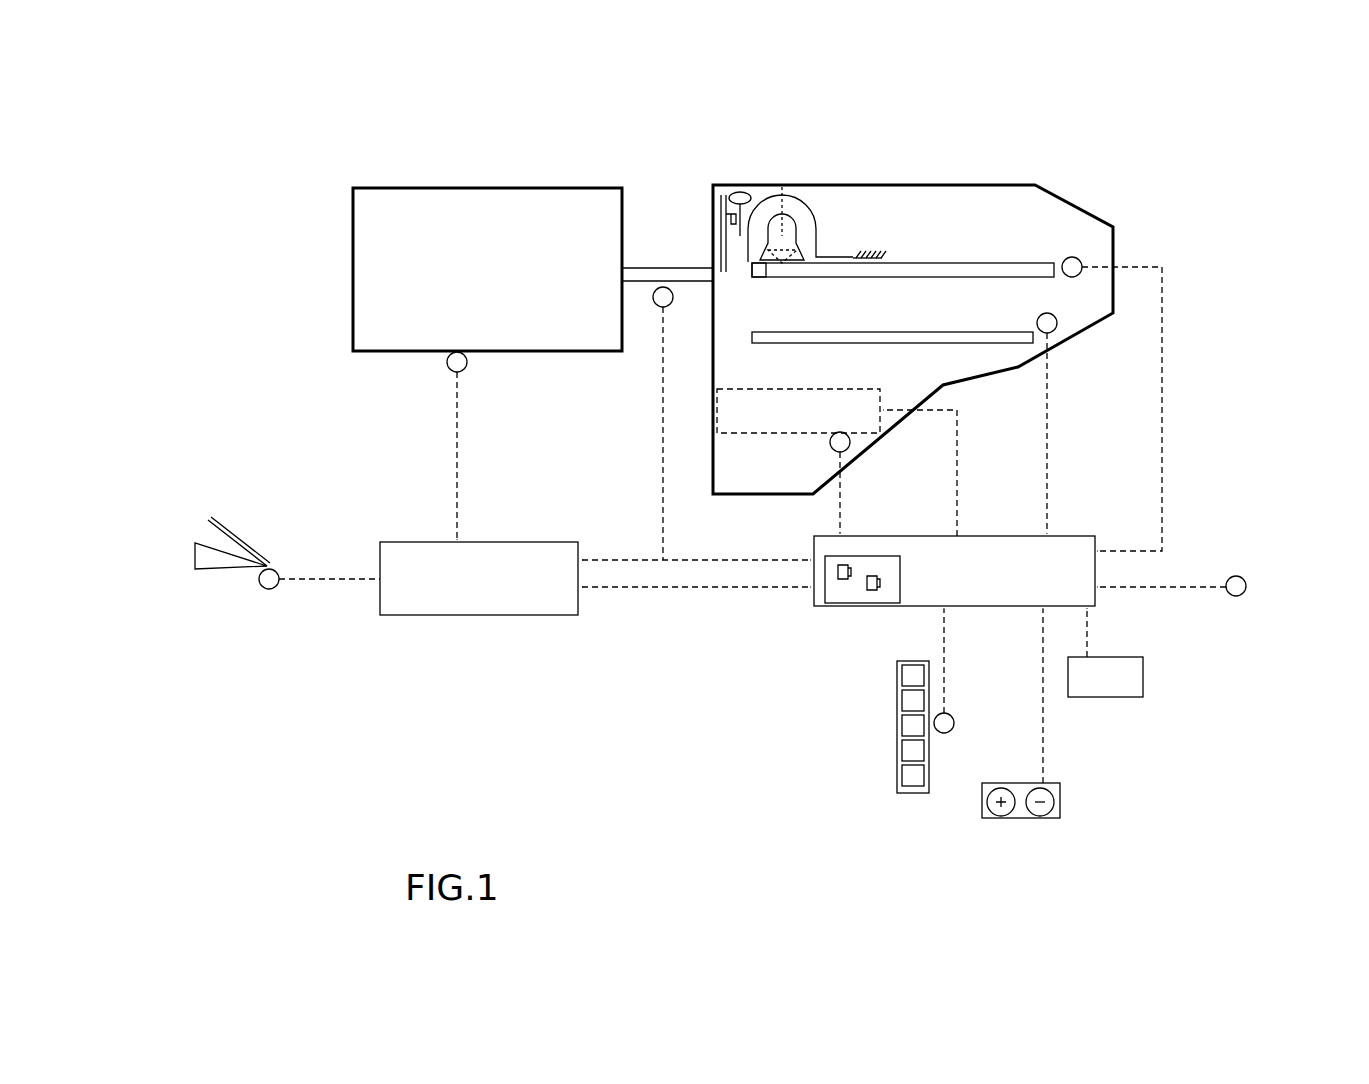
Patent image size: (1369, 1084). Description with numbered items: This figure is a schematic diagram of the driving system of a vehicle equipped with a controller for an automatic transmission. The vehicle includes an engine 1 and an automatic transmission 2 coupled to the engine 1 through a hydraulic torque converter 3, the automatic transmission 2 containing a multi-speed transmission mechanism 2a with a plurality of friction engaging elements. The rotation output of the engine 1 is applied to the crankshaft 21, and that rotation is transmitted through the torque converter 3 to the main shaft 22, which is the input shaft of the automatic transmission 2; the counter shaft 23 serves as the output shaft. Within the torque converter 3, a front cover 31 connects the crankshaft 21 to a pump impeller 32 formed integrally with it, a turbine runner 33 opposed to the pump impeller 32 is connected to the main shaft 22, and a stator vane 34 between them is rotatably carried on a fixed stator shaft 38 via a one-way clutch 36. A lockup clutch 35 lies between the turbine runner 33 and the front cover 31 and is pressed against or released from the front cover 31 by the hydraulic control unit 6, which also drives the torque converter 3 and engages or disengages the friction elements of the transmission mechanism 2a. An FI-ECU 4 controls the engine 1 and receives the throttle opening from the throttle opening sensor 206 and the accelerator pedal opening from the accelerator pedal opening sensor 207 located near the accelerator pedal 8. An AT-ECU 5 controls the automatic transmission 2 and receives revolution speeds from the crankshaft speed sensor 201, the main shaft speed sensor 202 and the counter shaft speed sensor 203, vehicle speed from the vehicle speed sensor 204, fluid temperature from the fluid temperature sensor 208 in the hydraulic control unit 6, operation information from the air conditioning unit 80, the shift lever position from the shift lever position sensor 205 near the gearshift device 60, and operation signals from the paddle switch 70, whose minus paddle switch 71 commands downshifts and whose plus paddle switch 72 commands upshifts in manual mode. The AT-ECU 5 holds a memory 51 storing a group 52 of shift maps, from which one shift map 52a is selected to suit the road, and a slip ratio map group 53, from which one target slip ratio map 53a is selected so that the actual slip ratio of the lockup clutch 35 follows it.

The engine 1 is at (512, 188).
The automatic transmission 2 is at (930, 186).
The multi-speed transmission mechanism 2a is at (985, 248).
The hydraulic torque converter 3 is at (797, 215).
The FI-ECU 4 is at (540, 542).
The AT-ECU 5 is at (939, 586).
The hydraulic control unit 6 is at (778, 434).
The accelerator pedal 8 is at (225, 523).
The crankshaft 21 is at (640, 268).
The main shaft 22 is at (915, 265).
The counter shaft 23 is at (765, 332).
The front cover 31 is at (727, 186).
The pump impeller 32 is at (790, 195).
The turbine runner 33 is at (774, 195).
The stator vane 34 is at (748, 270).
The lockup clutch 35 is at (712, 200).
The one-way clutch 36 is at (792, 268).
The stator shaft 38 is at (852, 256).
The memory 51 is at (882, 556).
The group of shift maps 52 is at (830, 599).
The shift map 52a is at (845, 582).
The slip ratio map group 53 is at (872, 601).
The target slip ratio map 53a is at (877, 592).
The gearshift device 60 is at (894, 735).
The paddle switch 70 is at (1056, 732).
The minus paddle switch 71 is at (1001, 816).
The plus paddle switch 72 is at (1040, 816).
The air conditioning unit 80 is at (1143, 677).
The crankshaft speed sensor 201 is at (660, 307).
The main shaft speed sensor 202 is at (1080, 258).
The counter shaft speed sensor 203 is at (1055, 317).
The vehicle speed sensor 204 is at (1242, 576).
The shift lever position sensor 205 is at (954, 723).
The throttle opening sensor 206 is at (455, 372).
The accelerator pedal opening sensor 207 is at (268, 590).
The fluid temperature sensor 208 is at (850, 452).